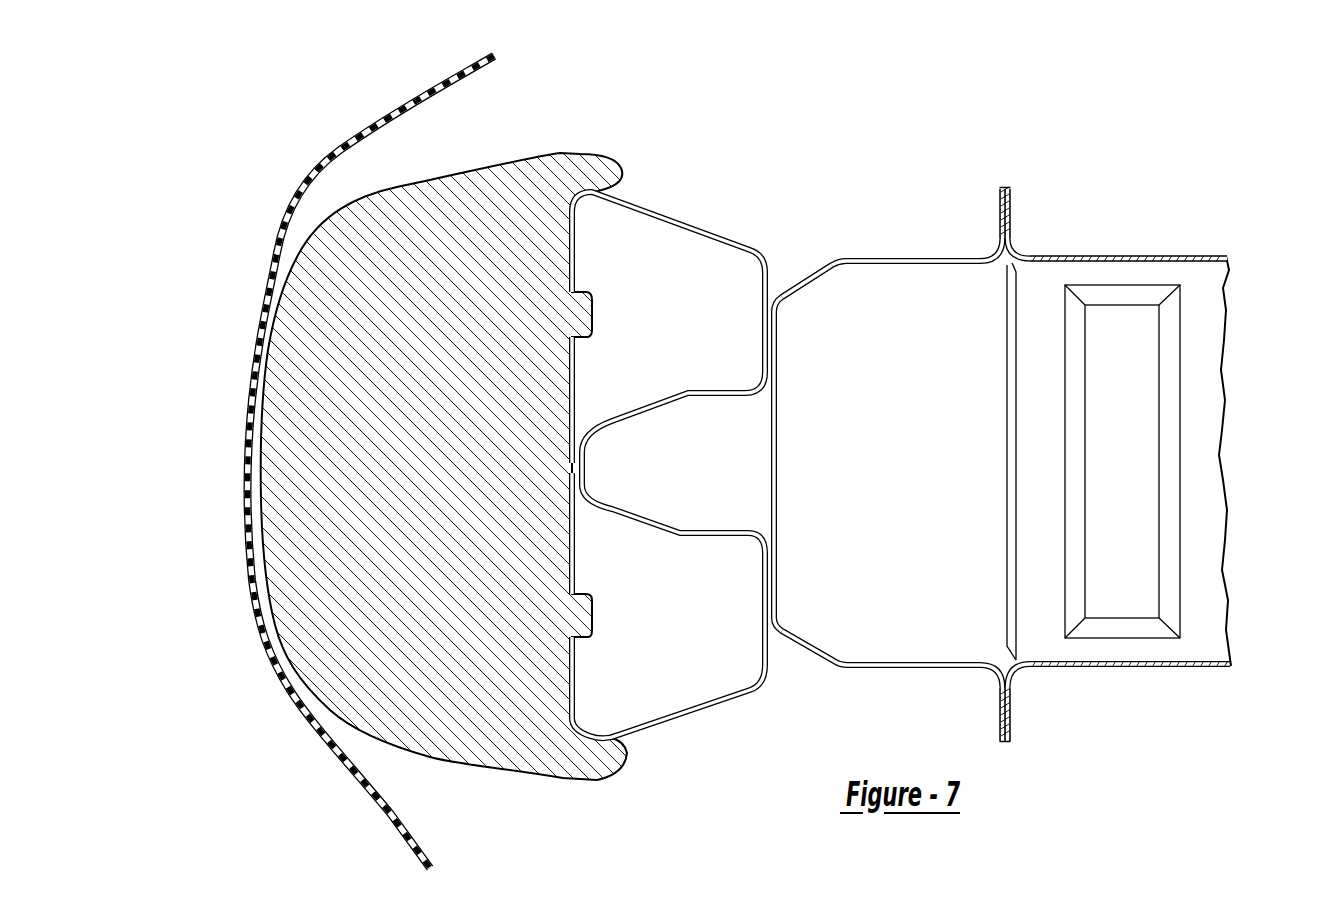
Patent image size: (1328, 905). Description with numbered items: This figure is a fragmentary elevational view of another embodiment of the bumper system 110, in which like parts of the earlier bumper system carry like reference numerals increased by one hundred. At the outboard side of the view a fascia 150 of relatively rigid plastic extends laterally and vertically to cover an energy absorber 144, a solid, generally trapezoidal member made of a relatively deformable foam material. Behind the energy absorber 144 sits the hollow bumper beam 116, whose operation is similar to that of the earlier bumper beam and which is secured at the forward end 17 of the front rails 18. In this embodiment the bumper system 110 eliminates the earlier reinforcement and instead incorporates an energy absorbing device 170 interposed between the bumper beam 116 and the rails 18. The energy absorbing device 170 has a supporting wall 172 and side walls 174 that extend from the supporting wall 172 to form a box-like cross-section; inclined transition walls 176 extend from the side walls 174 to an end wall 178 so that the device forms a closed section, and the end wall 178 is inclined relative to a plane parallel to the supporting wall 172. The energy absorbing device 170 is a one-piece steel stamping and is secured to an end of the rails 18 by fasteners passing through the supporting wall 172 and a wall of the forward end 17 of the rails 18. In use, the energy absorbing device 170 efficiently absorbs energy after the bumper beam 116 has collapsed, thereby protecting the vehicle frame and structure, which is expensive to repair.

The bumper system 110 is at (374, 88).
The fascia 150 is at (288, 215).
The energy absorber 144 is at (473, 208).
The bumper beam 116 is at (690, 211).
The energy absorbing device 170 is at (880, 435).
The side walls 174 is at (880, 258).
The inclined transition walls 176 is at (811, 278).
The end wall 178 is at (775, 450).
The supporting wall 172 is at (1000, 204).
The forward end 17 is at (1153, 461).
The front rails 18 is at (1196, 255).